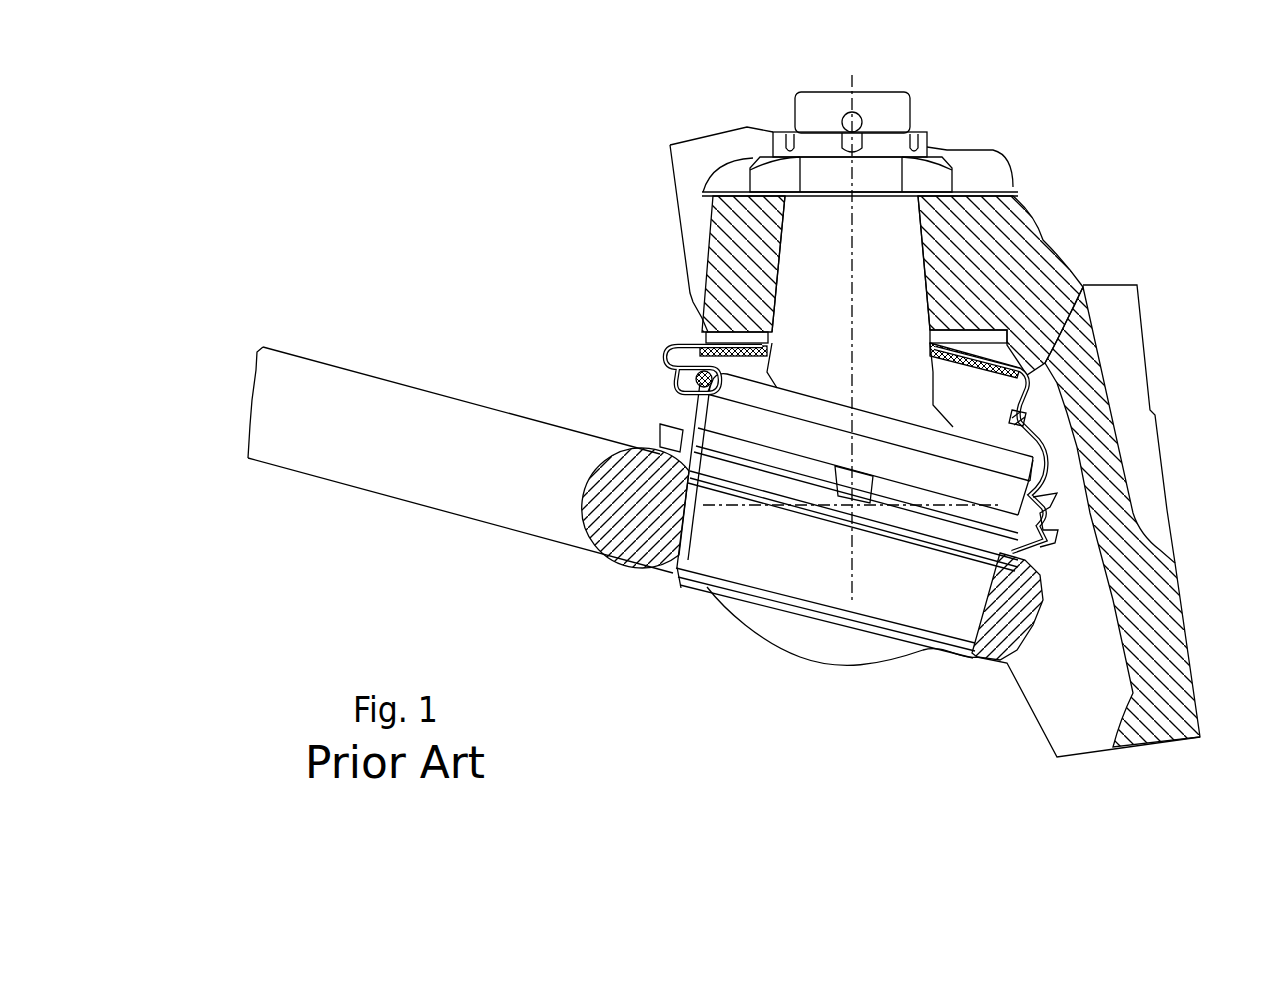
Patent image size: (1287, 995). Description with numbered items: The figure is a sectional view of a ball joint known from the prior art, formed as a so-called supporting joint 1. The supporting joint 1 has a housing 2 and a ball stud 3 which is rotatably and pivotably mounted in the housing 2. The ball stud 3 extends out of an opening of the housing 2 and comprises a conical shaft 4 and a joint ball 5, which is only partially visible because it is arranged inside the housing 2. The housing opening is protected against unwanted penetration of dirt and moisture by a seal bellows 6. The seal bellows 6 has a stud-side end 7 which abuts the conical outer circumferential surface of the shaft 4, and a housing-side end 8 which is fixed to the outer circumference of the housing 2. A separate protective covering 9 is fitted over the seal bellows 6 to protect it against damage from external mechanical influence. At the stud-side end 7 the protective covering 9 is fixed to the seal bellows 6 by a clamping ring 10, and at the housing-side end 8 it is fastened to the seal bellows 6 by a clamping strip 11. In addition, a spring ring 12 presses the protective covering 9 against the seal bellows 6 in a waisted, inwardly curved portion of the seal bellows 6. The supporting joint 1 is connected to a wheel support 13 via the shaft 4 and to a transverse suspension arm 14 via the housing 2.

The supporting joint 1 is at (937, 106).
The housing 2 is at (707, 552).
The ball stud 3 is at (985, 368).
The conical shaft 4 is at (800, 272).
The joint ball 5 is at (1010, 423).
The seal bellows 6 is at (670, 348).
The stud-side end 7 is at (677, 343).
The housing-side end 8 is at (668, 412).
The protective covering 9 is at (667, 363).
The clamping ring 10 is at (950, 342).
The clamping strip 11 is at (1057, 493).
The spring ring 12 is at (1026, 418).
The wheel support 13 is at (1008, 215).
The transverse suspension arm 14 is at (348, 448).